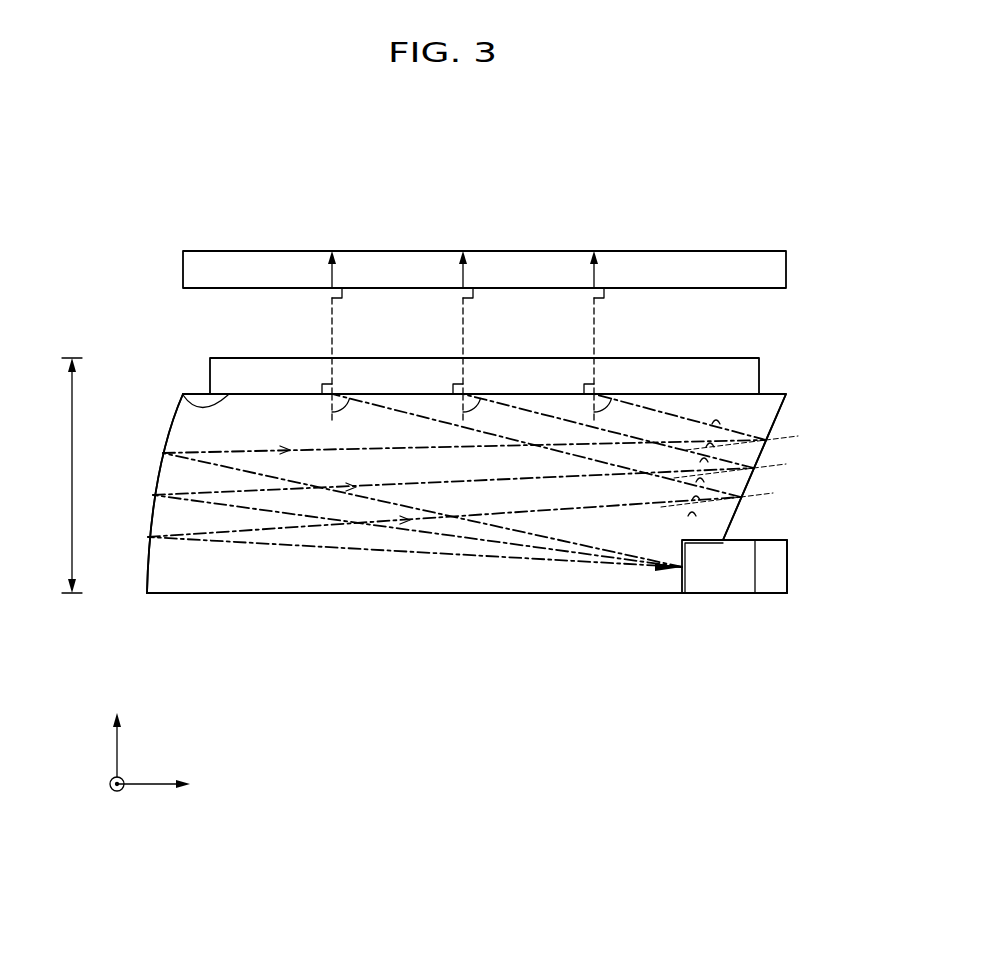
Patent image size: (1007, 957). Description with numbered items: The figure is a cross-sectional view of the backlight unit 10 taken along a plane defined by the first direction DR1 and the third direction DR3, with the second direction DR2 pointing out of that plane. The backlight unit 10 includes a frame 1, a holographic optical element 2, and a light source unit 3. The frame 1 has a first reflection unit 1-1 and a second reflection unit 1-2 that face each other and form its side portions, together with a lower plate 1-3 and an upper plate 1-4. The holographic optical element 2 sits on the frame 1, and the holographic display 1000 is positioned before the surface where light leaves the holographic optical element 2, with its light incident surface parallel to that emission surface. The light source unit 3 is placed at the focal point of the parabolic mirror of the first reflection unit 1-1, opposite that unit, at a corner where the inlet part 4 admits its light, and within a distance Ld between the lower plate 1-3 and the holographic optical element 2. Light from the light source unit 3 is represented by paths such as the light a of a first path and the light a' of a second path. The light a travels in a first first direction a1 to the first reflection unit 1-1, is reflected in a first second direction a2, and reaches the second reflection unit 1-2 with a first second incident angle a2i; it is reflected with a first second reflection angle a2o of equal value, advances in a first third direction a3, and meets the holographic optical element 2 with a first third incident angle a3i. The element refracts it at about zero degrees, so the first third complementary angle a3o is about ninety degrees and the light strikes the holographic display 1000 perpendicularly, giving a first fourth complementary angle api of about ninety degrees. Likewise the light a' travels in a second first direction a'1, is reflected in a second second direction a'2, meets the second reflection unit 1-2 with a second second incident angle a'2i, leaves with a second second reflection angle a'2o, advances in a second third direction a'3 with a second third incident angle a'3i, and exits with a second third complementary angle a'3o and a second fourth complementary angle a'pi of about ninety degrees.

The holographic display 1000 is at (183, 267).
The backlight unit 10 is at (776, 329).
The frame 1 is at (750, 713).
The first reflection unit 1-1 is at (148, 513).
The second reflection unit 1-2 is at (735, 525).
The lower plate 1-3 is at (485, 597).
The upper plate 1-4 is at (183, 397).
The holographic optical element 2 is at (210, 382).
The light source unit 3 is at (725, 597).
The inlet part 4 is at (682, 578).
The distance Ld is at (66, 475).
The light of a first path a is at (332, 254).
The light of a second path a' is at (463, 254).
The first first direction a1 is at (380, 562).
The second first direction a'1 is at (417, 531).
The first second direction a2 is at (525, 521).
The second second direction a'2 is at (469, 486).
The first third direction a3 is at (388, 422).
The second third direction a'3 is at (608, 431).
The first third complementary angle a3o is at (307, 376).
The second third complementary angle a'3o is at (438, 376).
The first third incident angle a3i is at (353, 416).
The second third incident angle a'3i is at (487, 416).
The first fourth complementary angle api is at (355, 323).
The second fourth complementary angle a'pi is at (487, 323).
The first second reflection angle a2o is at (692, 500).
The first second incident angle a2i is at (688, 516).
The second second reflection angle a'2o is at (769, 469).
The second second incident angle a'2i is at (763, 493).
The first direction DR1 is at (174, 786).
The second direction DR2 is at (97, 797).
The third direction DR3 is at (119, 728).